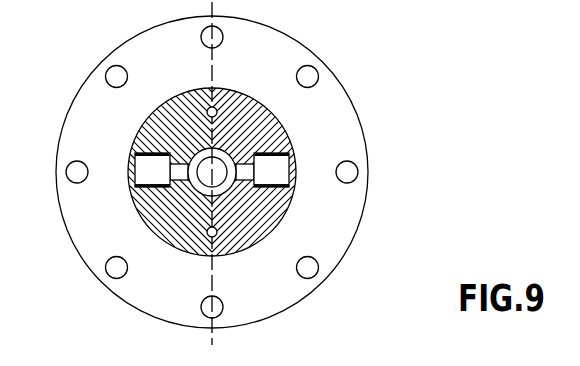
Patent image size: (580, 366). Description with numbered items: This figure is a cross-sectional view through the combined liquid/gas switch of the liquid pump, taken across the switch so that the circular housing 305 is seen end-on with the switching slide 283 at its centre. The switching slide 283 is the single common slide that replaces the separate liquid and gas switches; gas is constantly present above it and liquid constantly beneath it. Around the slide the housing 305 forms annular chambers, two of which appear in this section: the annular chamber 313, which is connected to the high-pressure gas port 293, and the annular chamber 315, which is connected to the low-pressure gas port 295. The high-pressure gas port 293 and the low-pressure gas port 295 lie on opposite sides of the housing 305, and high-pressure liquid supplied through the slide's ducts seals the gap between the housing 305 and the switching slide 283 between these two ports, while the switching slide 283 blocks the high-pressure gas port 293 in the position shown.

The switching slide 283 is at (171, 112).
The high-pressure gas port 293 is at (145, 162).
The low-pressure gas port 295 is at (277, 177).
The housing 305 is at (275, 50).
The annular chamber 313 is at (197, 172).
The annular chamber 315 is at (238, 158).